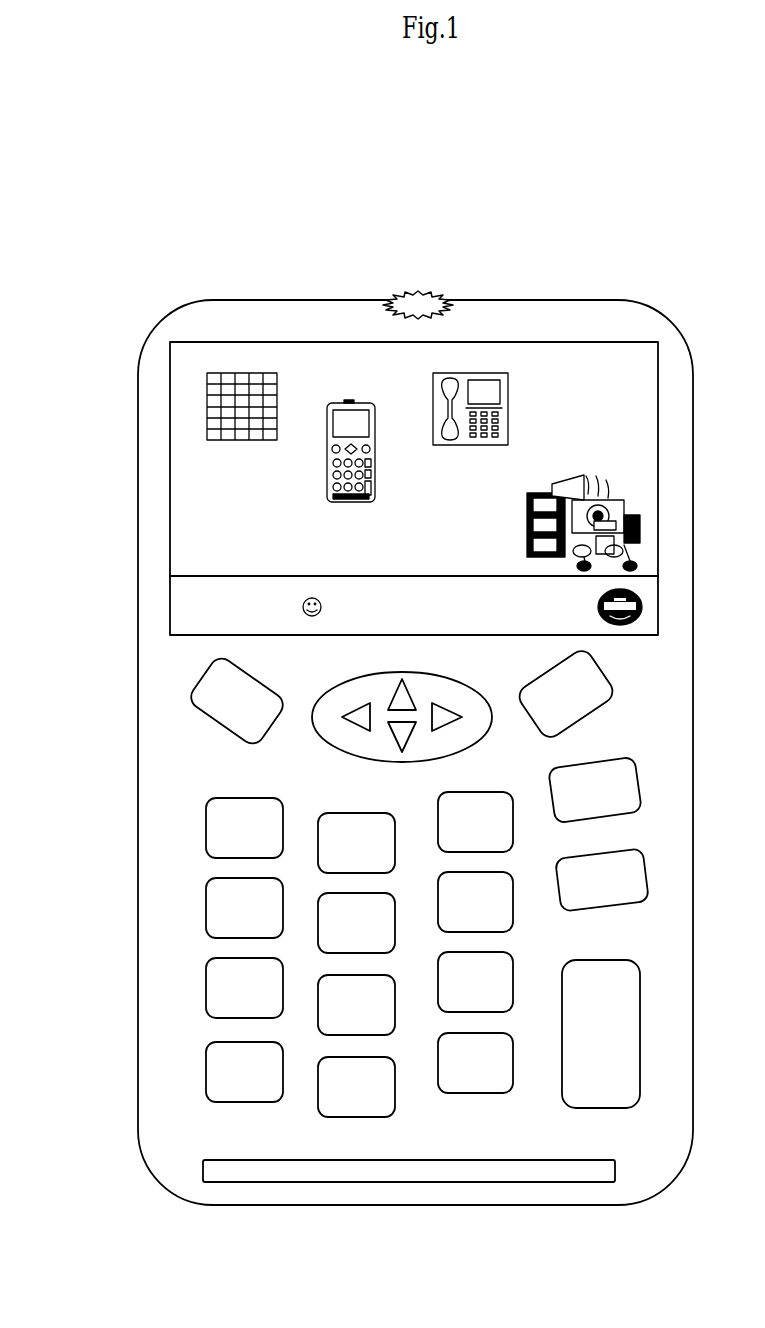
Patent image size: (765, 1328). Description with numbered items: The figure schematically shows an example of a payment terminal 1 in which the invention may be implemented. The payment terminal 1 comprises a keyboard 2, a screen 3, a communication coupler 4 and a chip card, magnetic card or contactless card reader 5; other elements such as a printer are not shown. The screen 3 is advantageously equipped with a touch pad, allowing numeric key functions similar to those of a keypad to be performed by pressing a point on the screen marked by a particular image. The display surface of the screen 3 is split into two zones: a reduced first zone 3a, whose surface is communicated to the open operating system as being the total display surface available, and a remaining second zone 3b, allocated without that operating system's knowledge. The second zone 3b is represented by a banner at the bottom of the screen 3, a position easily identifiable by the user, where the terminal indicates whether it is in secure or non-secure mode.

The payment terminal 1 is at (171, 318).
The keyboard 2 is at (188, 945).
The screen 3 is at (292, 343).
The zone 3a is at (176, 470).
The zone 3b is at (176, 604).
The communication coupler 4 is at (439, 297).
The chip card, magnetic card or contactless card reader 5 is at (203, 1178).